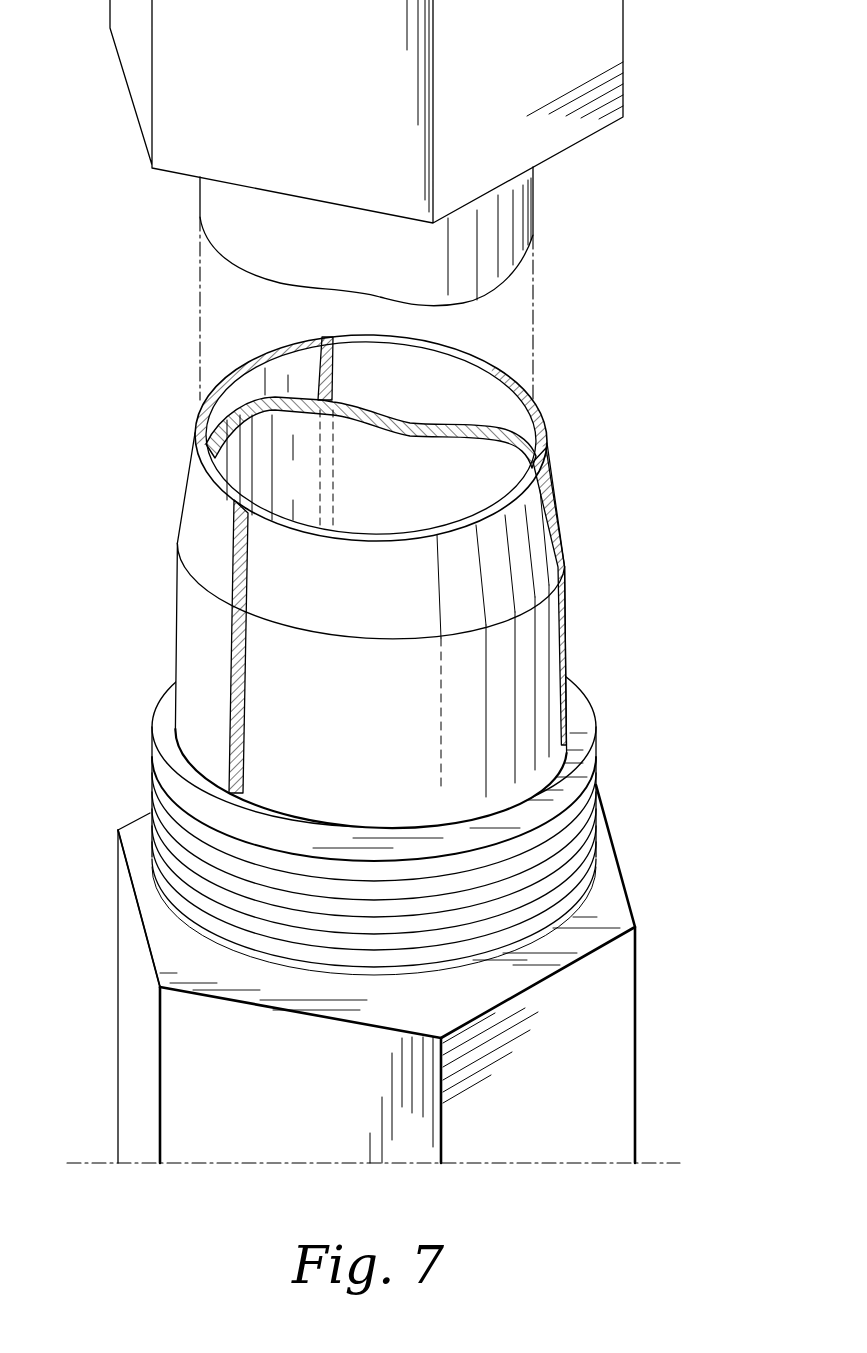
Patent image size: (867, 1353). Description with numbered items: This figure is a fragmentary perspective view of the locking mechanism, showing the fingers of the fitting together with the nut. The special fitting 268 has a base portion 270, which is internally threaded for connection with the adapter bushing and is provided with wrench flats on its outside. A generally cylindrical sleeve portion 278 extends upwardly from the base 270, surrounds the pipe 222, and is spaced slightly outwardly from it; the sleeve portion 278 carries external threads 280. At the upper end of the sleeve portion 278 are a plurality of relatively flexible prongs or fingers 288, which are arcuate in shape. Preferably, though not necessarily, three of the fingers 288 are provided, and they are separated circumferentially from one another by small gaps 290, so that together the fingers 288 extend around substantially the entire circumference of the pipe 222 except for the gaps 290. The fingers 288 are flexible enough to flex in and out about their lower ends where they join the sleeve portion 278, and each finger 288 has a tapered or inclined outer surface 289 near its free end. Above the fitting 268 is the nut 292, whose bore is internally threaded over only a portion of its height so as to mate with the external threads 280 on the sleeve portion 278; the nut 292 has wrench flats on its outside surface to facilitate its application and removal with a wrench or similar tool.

The pipe 222 is at (500, 228).
The fitting 268 is at (597, 917).
The base portion 270 is at (600, 1000).
The sleeve portion 278 is at (570, 748).
The external threads 280 is at (560, 832).
The fingers 288 is at (192, 635).
The tapered outer surface 289 is at (490, 573).
The gaps 290 is at (318, 345).
The nut 292 is at (583, 43).